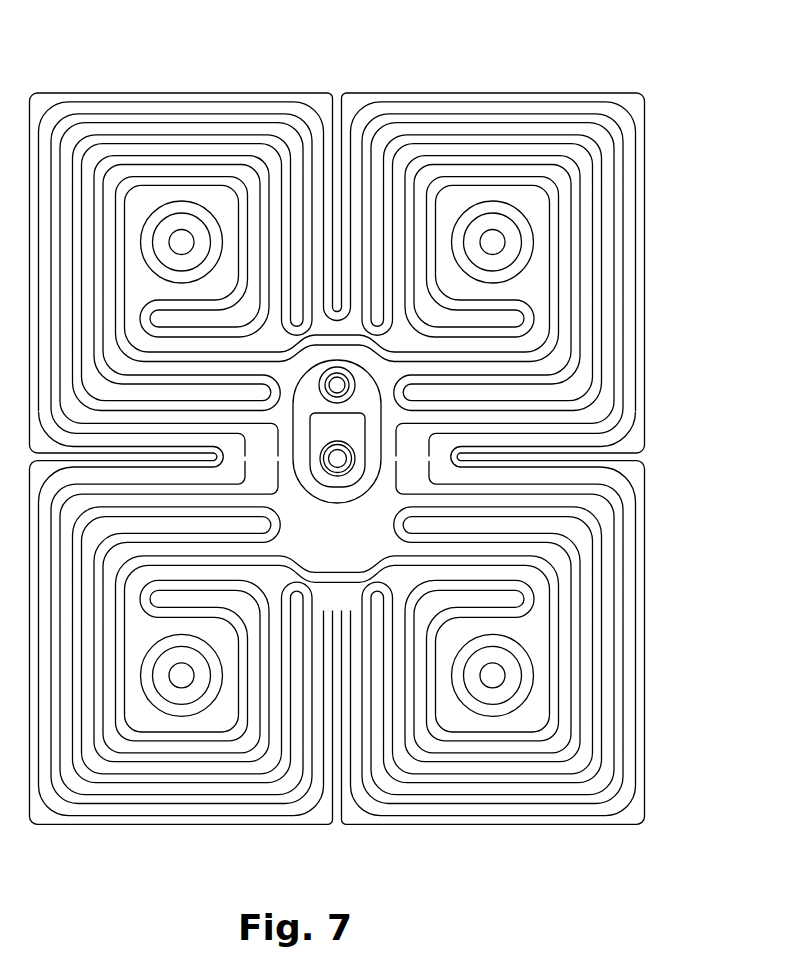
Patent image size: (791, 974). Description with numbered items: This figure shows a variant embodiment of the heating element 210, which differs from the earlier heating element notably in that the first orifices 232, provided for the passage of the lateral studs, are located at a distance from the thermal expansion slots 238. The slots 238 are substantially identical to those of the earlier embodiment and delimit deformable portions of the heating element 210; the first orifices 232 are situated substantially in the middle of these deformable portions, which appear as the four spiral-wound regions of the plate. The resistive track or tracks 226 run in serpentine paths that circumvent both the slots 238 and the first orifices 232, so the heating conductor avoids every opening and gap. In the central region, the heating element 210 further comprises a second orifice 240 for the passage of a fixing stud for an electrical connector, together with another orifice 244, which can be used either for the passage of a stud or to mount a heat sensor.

The heating element 210 is at (682, 101).
The resistive track 226 is at (600, 668).
The first orifice 232 is at (182, 230).
The thermal expansion slot 238 is at (342, 114).
The second orifice 240 is at (343, 470).
The another orifice 244 is at (356, 383).